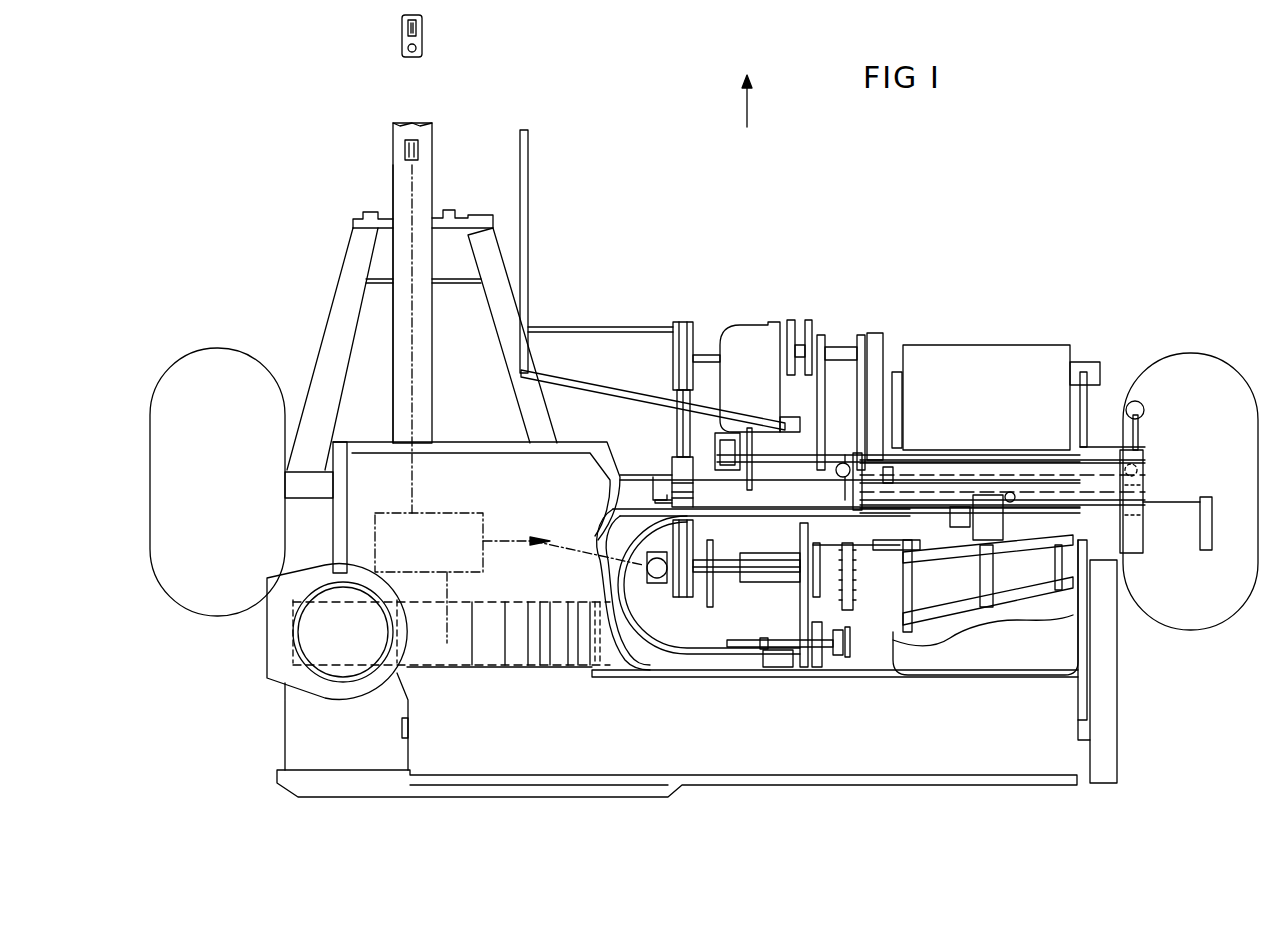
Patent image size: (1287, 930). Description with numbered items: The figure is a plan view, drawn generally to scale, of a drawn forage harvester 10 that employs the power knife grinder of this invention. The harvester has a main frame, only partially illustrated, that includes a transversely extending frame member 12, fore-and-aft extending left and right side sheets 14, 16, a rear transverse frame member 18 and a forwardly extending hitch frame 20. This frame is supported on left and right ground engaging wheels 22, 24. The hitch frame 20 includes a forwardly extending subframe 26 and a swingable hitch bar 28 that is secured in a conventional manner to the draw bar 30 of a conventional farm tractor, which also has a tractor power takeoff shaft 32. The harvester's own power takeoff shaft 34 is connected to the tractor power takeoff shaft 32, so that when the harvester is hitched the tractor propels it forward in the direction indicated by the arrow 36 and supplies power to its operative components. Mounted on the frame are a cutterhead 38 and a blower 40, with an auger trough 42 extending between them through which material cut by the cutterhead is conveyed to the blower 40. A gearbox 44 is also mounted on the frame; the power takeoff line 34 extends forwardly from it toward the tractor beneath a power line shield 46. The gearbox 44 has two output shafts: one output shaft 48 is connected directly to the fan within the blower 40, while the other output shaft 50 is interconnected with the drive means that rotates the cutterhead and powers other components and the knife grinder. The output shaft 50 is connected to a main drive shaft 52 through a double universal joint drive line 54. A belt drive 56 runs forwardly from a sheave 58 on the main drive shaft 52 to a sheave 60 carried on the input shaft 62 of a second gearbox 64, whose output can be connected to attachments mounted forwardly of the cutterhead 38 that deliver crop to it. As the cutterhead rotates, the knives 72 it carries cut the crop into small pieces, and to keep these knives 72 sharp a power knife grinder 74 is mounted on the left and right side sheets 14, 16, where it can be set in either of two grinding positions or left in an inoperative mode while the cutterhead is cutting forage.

The forage harvester 10 is at (847, 308).
The transversely extending frame member 12 is at (300, 508).
The left side sheet 14 is at (893, 632).
The right side sheet 16 is at (1082, 560).
The rear transverse frame member 18 is at (677, 668).
The hitch frame 20 is at (296, 289).
The left ground engaging wheel 22 is at (163, 468).
The right ground engaging wheel 24 is at (1203, 363).
The forwardly extending subframe 26 is at (505, 272).
The swingable hitch bar 28 is at (440, 127).
The draw bar 30 is at (422, 40).
The tractor power takeoff shaft 32 is at (400, 22).
The power takeoff shaft 34 is at (405, 150).
The arrow 36 is at (766, 109).
The cutterhead 38 is at (1058, 624).
The blower 40 is at (526, 683).
The auger trough 42 is at (720, 757).
The gearbox 44 is at (430, 513).
The power line shield 46 is at (395, 187).
The output shaft 48 is at (447, 585).
The output shaft 50 is at (498, 540).
The main drive shaft 52 is at (700, 573).
The double universal joint drive line 54 is at (560, 545).
The belt drive 56 is at (687, 397).
The sheave 58 is at (673, 588).
The sheave 60 is at (673, 343).
The input shaft 62 is at (708, 355).
The gearbox 64 is at (752, 340).
The knives 72 is at (1013, 602).
The power knife grinder 74 is at (950, 476).